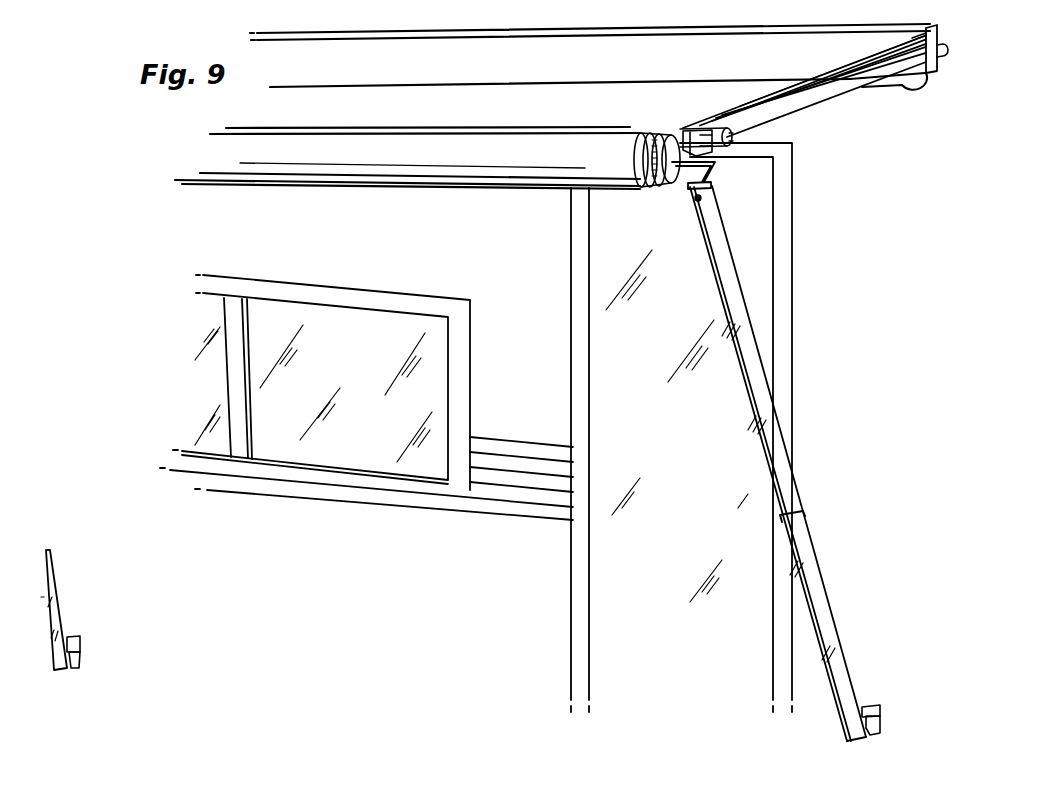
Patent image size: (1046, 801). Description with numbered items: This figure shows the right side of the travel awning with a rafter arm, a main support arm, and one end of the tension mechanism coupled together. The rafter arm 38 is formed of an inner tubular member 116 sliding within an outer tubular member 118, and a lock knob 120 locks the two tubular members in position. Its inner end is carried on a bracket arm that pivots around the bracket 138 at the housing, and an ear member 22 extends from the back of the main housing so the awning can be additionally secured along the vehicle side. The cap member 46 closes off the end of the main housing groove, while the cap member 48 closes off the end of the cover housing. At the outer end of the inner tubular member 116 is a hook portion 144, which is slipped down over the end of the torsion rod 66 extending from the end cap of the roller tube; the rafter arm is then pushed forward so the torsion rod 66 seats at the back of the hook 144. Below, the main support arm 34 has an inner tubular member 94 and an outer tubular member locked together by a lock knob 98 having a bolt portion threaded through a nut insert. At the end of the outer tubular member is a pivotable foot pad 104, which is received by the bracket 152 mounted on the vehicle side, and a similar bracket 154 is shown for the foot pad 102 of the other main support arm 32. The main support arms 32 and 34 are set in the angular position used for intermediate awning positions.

The ear member 22 is at (946, 58).
The main support arm 32 is at (52, 597).
The main support arm 34 is at (800, 545).
The rafter arm 38 is at (818, 103).
The cap member 46 is at (940, 38).
The cap member 48 is at (866, 96).
The torsion rod 66 is at (716, 172).
The inner tubular member 94 is at (758, 382).
The lock knob 98 is at (697, 204).
The foot pad 102 is at (70, 640).
The foot pad 104 is at (890, 694).
The inner tubular member 116 is at (780, 112).
The outer tubular member 118 is at (757, 82).
The lock knob 120 is at (731, 140).
The bracket 138 is at (918, 34).
The hook portion 144 is at (692, 128).
The bracket 152 is at (78, 660).
The bracket 154 is at (877, 738).